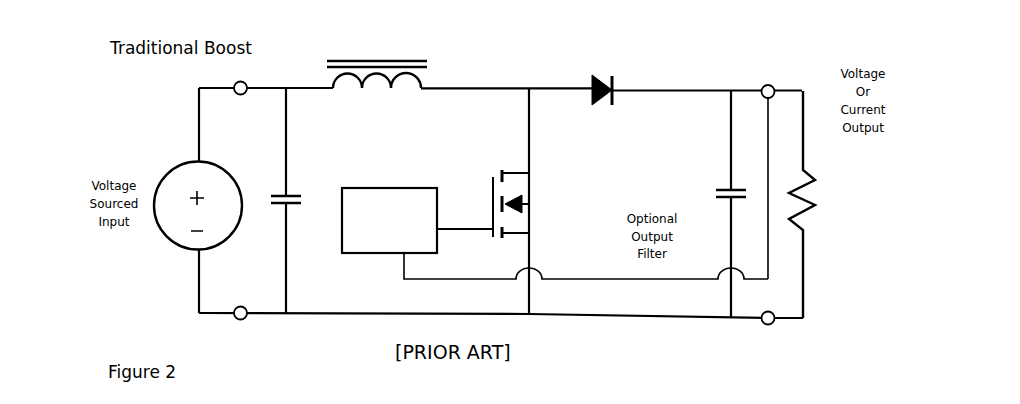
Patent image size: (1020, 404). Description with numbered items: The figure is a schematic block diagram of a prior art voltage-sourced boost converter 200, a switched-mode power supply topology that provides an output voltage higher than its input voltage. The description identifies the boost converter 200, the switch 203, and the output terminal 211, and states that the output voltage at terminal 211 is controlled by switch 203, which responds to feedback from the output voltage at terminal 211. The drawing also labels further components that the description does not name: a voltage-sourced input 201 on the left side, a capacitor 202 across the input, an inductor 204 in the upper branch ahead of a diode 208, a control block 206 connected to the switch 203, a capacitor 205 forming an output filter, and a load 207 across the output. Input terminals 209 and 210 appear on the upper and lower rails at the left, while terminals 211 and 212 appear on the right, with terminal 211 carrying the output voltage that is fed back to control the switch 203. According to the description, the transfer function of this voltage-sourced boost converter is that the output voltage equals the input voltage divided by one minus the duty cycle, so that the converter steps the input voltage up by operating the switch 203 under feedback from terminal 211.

The boost converter 200 is at (150, 113).
The voltage sourced input 201 is at (172, 164).
The input capacitor 202 is at (303, 200).
The switch 203 is at (503, 167).
The inductor 204 is at (401, 40).
The output filter capacitor 205 is at (715, 197).
The duty cycle control 206 is at (392, 187).
The load resistor 207 is at (812, 198).
The diode 208 is at (610, 68).
The positive input terminal 209 is at (252, 70).
The negative input terminal 210 is at (246, 320).
The terminal 211 is at (767, 84).
The negative output terminal 212 is at (768, 325).